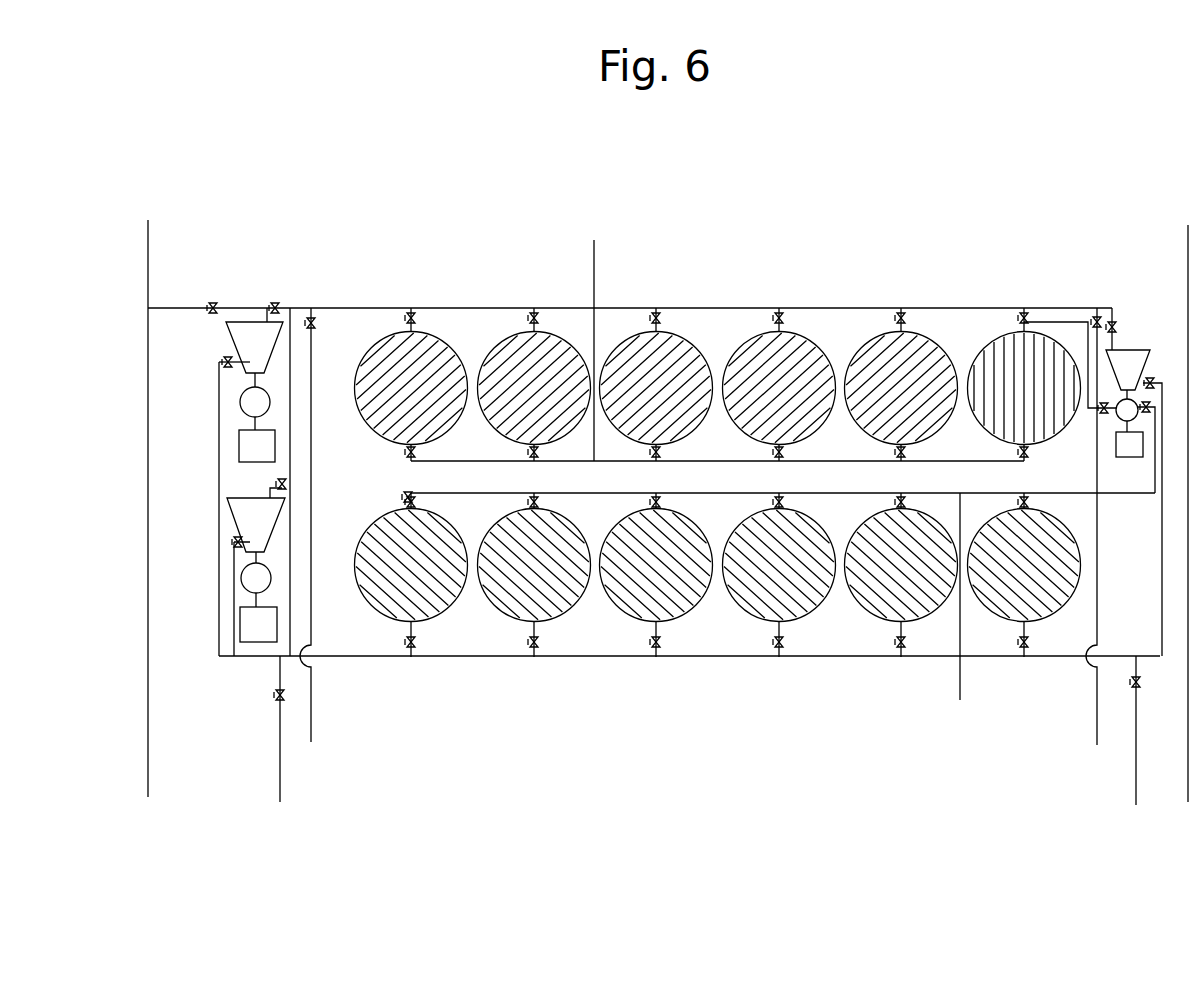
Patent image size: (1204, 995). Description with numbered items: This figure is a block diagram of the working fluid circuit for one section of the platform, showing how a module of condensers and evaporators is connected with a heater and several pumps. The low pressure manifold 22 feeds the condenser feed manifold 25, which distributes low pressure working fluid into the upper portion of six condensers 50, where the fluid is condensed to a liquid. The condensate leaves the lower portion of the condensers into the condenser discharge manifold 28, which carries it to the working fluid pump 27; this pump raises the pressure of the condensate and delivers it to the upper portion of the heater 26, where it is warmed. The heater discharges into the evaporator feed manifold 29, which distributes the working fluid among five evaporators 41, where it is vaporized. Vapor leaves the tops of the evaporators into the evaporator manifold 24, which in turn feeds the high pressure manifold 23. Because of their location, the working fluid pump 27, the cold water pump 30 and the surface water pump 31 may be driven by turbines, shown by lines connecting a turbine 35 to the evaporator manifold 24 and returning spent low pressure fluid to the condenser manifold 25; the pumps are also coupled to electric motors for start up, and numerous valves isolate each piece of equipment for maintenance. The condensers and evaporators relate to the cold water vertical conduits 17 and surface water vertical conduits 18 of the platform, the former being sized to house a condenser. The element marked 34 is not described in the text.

The cold water vertical conduit 17 is at (707, 597).
The surface water vertical conduit 18 is at (432, 332).
The low pressure manifold 22 is at (1188, 277).
The high pressure manifold 23 is at (150, 730).
The evaporator manifold 24 is at (790, 308).
The condenser feed manifold 25 is at (460, 660).
The heater 26 is at (1005, 365).
The working fluid pump 27 is at (1127, 410).
The condenser discharge manifold 28 is at (960, 700).
The evaporator feed manifold 29 is at (594, 240).
The cold water pump 30 is at (257, 578).
The surface water pump 31 is at (255, 400).
The motor 34 is at (256, 443).
The turbine 35 is at (243, 332).
The evaporator 41 is at (888, 378).
The condenser 50 is at (528, 593).